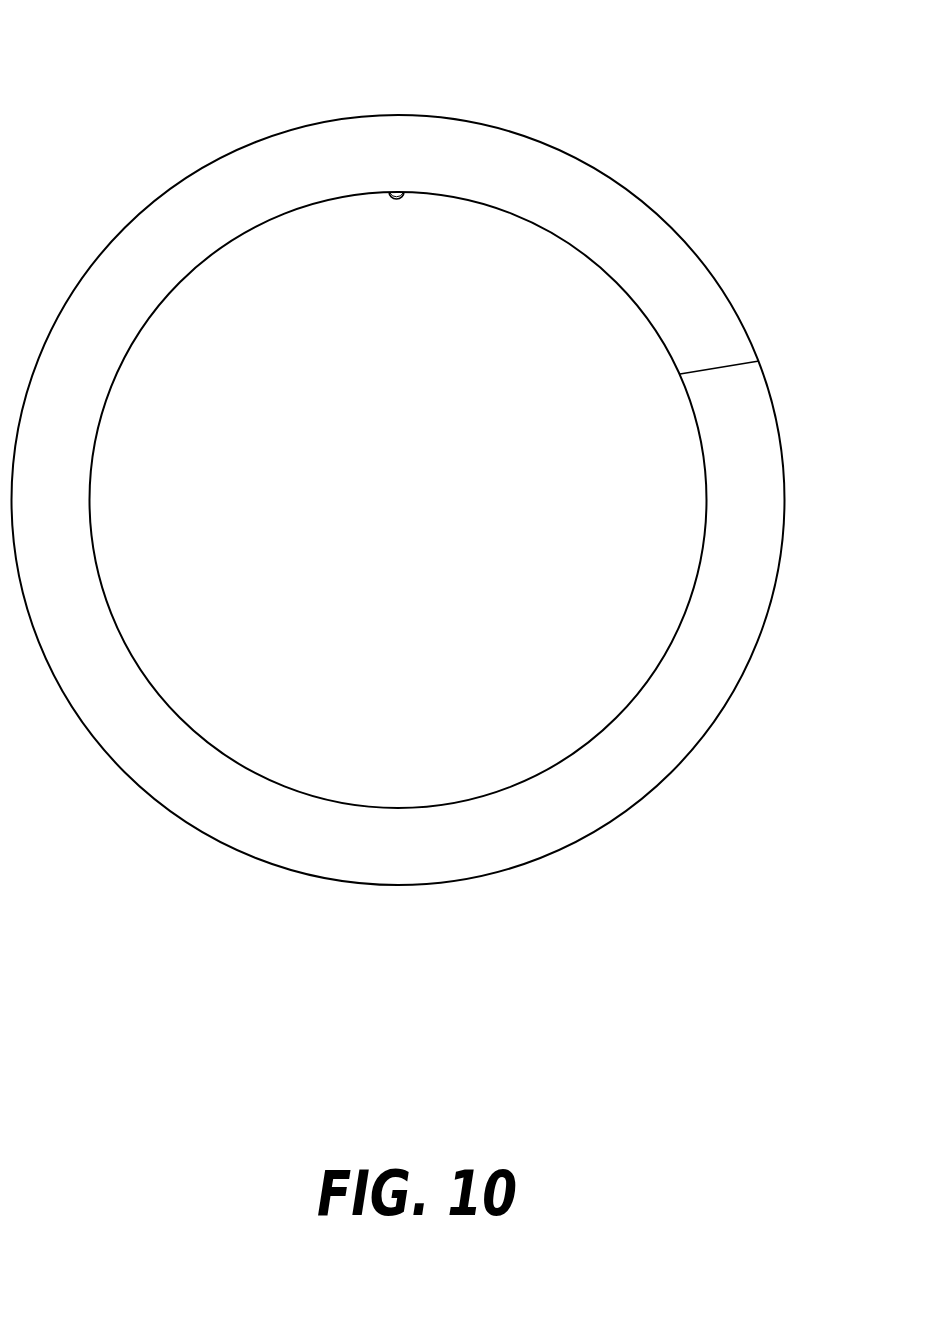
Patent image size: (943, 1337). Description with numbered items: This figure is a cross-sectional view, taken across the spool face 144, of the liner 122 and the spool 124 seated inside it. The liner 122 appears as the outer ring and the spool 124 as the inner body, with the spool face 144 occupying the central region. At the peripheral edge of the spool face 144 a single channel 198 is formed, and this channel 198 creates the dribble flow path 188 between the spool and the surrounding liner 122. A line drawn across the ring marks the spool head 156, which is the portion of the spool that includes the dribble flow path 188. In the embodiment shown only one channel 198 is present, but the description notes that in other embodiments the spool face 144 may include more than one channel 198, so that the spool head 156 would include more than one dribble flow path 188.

The liner 122 is at (649, 252).
The spool 124 is at (229, 231).
The spool head 156 is at (751, 353).
The dribble flow path 188 is at (392, 184).
The channel 198 is at (389, 191).
The spool face 144 is at (413, 495).